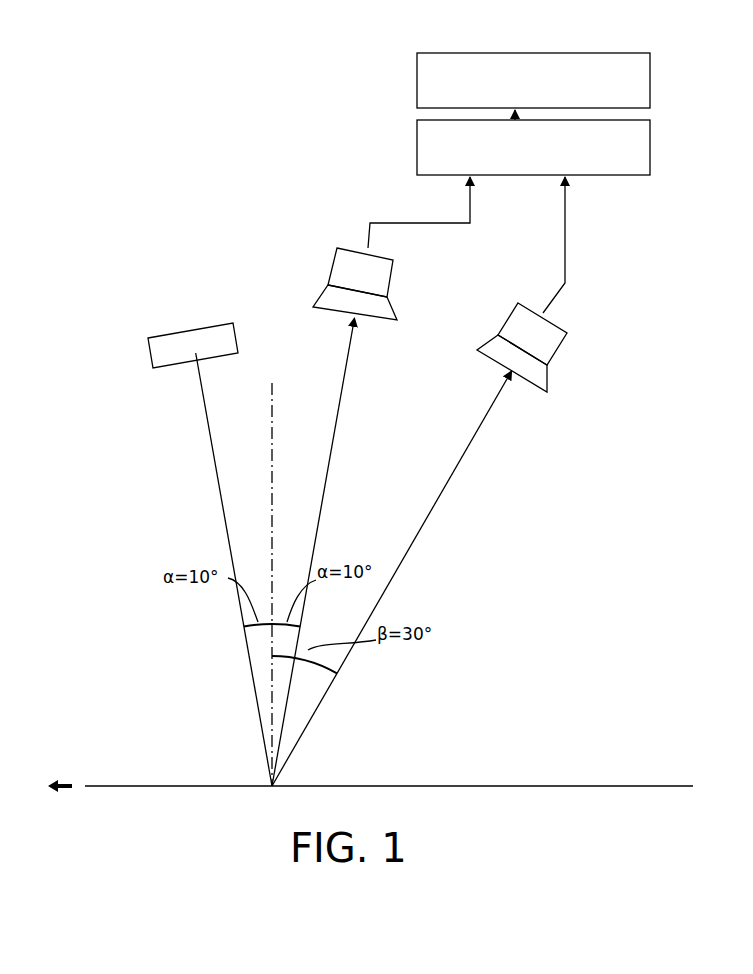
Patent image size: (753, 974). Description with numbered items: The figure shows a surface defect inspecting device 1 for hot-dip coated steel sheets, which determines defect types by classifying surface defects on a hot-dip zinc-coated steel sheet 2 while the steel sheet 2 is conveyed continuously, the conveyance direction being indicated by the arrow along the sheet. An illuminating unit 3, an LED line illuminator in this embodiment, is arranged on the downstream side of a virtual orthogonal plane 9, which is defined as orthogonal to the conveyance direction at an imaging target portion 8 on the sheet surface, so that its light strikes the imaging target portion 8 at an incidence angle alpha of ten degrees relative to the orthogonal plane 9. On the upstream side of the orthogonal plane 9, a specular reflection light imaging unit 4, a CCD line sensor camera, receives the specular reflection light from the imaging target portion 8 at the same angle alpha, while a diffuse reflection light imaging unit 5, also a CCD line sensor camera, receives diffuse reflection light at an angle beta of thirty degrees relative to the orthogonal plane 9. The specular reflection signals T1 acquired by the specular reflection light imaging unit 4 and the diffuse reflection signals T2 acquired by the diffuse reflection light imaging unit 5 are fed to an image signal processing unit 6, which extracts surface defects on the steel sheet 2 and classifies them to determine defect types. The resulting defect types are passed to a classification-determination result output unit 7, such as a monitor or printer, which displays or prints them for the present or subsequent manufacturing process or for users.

The surface defect inspecting device 1 is at (297, 72).
The hot-dip zinc-coated steel sheet 2 is at (197, 784).
The illuminating unit 3 is at (192, 330).
The specular reflection light imaging unit 4 is at (332, 264).
The diffuse reflection light imaging unit 5 is at (510, 318).
The image signal processing unit 6 is at (417, 152).
The classification-determination result output unit 7 is at (417, 86).
The imaging target portion 8 is at (265, 782).
The orthogonal plane 9 is at (270, 410).
The specular reflection signals T1 is at (419, 212).
The diffuse reflection signals T2 is at (549, 245).